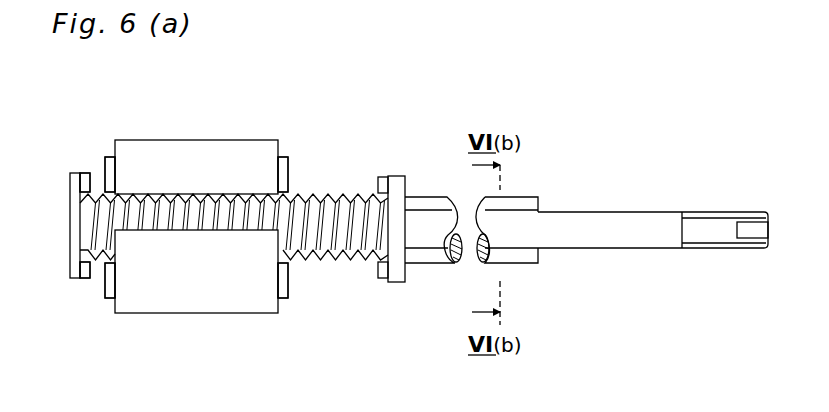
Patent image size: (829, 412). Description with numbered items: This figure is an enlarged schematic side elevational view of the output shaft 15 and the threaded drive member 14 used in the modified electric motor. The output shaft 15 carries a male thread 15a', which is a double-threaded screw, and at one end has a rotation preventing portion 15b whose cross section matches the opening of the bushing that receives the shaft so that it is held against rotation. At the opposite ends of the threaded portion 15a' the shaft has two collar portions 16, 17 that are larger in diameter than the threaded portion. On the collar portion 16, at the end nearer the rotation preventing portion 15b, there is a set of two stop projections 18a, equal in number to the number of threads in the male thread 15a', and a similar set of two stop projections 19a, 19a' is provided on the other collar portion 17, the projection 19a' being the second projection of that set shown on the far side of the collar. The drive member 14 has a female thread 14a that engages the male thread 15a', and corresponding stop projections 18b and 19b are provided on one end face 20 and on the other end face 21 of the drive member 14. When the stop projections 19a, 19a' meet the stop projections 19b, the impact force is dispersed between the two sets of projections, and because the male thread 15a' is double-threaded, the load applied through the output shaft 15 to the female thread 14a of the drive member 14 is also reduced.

The drive member 14 is at (191, 296).
The female thread 14a is at (207, 194).
The output shaft 15 is at (628, 242).
The male thread 15a' is at (234, 293).
The rotation preventing portion 15b is at (530, 270).
The collar portion 16 is at (396, 278).
The collar portion 17 is at (72, 212).
The stop projections 18a is at (380, 177).
The stop projections 18b is at (285, 170).
The stop projections 19a is at (66, 254).
The projection 19a' is at (46, 252).
The stop projections 19b is at (107, 157).
The end face 20 is at (287, 156).
The end face 21 is at (108, 156).